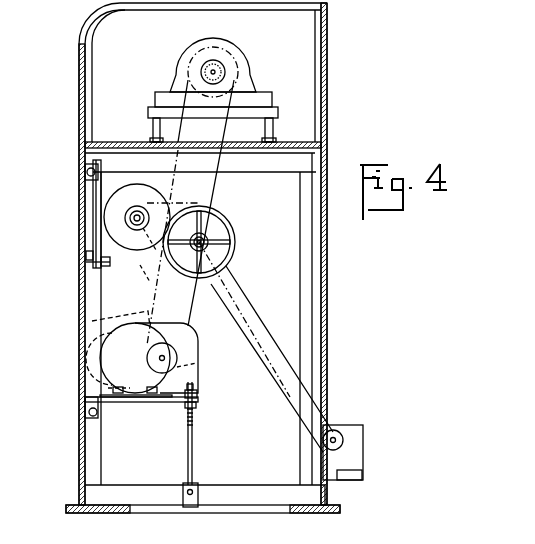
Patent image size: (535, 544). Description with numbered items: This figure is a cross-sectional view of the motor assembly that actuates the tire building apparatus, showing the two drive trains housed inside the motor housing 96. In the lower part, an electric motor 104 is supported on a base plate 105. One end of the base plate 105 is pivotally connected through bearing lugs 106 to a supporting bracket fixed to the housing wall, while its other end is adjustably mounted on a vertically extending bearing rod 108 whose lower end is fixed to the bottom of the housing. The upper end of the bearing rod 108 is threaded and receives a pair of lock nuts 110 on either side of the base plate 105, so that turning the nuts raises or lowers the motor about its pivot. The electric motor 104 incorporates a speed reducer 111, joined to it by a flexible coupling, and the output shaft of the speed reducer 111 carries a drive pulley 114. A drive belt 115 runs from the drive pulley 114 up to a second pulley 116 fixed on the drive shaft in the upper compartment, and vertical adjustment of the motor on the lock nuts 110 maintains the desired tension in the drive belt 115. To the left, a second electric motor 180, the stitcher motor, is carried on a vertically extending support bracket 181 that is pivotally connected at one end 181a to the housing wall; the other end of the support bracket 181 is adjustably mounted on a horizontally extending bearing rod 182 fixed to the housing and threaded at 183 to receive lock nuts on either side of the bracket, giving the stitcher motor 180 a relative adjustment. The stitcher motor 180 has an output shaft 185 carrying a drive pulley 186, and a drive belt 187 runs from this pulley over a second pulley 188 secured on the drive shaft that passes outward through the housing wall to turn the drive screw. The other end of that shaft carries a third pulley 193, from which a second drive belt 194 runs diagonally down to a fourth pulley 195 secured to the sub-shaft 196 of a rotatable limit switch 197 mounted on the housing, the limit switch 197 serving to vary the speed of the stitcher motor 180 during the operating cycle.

The motor housing 96 is at (328, 91).
The electric motor 104 is at (101, 350).
The base plate 105 is at (151, 403).
The bearing lugs 106 is at (85, 412).
The bearing rod 108 is at (193, 456).
The lock nuts 110 is at (200, 399).
The speed reducer 111 is at (193, 343).
The drive pulley 114 is at (207, 360).
The drive belt 115 is at (92, 321).
The second pulley 116 is at (241, 63).
The second electric motor 180 is at (133, 250).
The support bracket 181 is at (97, 198).
The pivotally connected end 181a is at (86, 172).
The bearing rod 182 is at (88, 259).
The threaded portion 183 is at (101, 276).
The output shaft 185 is at (131, 222).
The drive pulley 186 is at (128, 214).
The drive belt 187 is at (143, 272).
The second pulley 188 is at (230, 227).
The third pulley 193 is at (209, 240).
The second drive belt 194 is at (247, 292).
The fourth pulley 195 is at (338, 432).
The sub-shaft 196 is at (338, 441).
The rotatable limit switch 197 is at (363, 475).